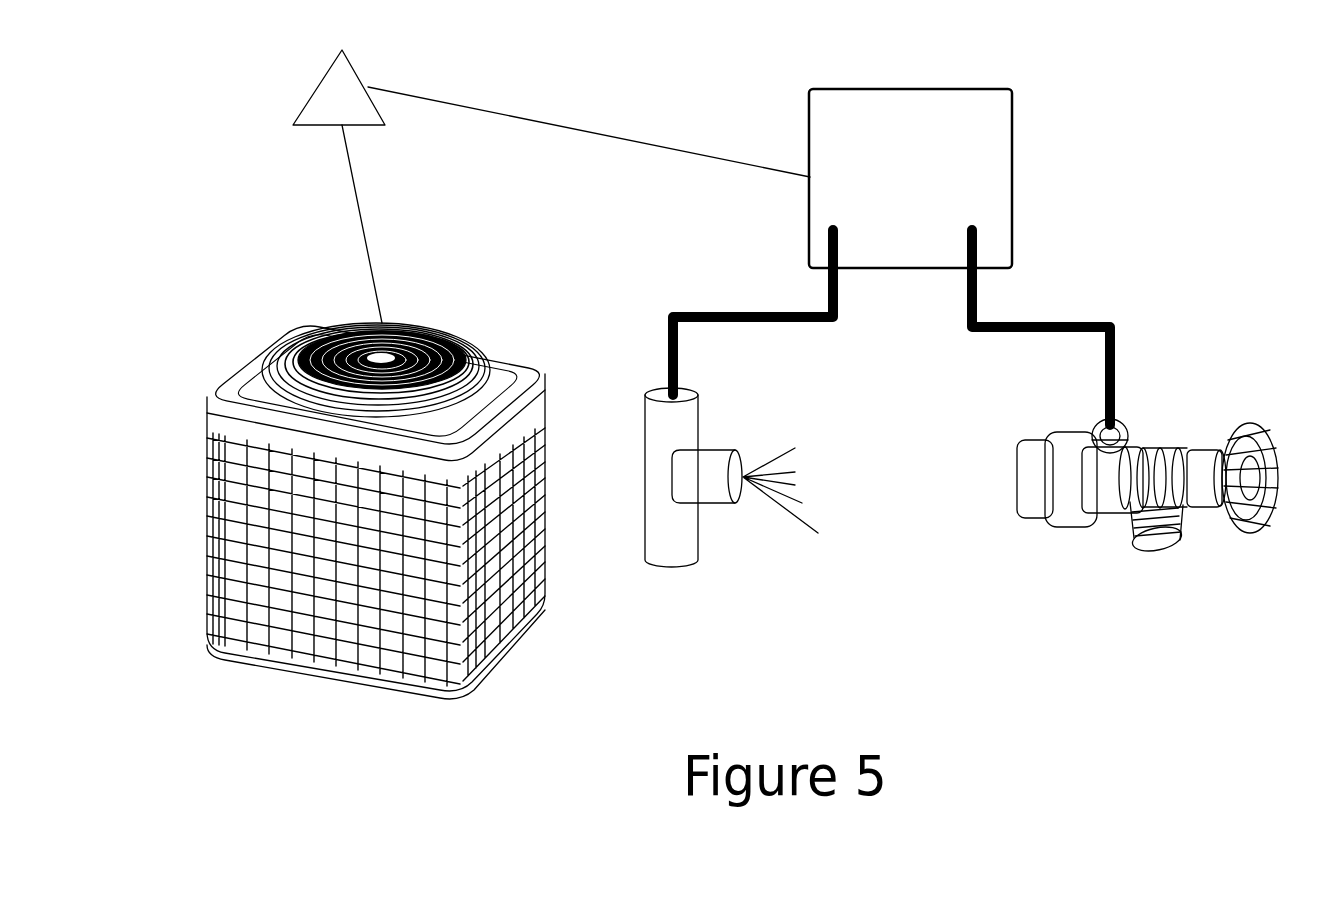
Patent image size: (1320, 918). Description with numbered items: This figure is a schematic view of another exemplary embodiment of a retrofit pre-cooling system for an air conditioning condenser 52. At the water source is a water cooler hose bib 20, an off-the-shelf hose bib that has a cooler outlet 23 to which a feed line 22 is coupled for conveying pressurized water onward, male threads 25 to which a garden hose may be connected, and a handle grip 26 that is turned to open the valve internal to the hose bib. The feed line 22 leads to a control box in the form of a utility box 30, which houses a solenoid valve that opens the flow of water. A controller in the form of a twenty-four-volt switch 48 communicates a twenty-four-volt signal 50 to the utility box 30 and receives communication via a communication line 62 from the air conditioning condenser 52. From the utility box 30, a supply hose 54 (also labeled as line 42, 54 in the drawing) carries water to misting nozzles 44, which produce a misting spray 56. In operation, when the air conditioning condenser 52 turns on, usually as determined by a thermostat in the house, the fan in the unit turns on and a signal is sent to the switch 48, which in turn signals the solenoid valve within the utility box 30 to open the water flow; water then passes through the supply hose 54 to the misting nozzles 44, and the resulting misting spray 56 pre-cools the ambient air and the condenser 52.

The water cooler hose bib 20 is at (1137, 493).
The feed line 22 is at (1043, 320).
The cooler outlet 23 is at (1107, 433).
The male threads 25 is at (1182, 527).
The handle grip 26 is at (1247, 427).
The utility box 30 is at (980, 140).
The sensor wire 42 is at (770, 312).
The misting nozzles 44 is at (705, 488).
The 24-volt switch 48 is at (347, 83).
The 24-volt signal 50 is at (583, 128).
The air conditioning condenser 52 is at (494, 335).
The W' supply hose 54 is at (747, 322).
The misting spray 56 is at (817, 486).
The communication line 62 is at (365, 240).